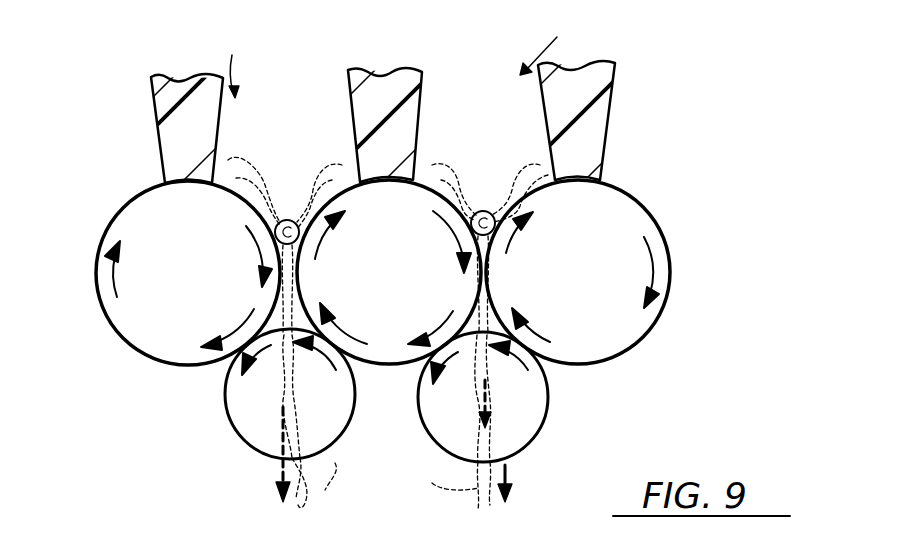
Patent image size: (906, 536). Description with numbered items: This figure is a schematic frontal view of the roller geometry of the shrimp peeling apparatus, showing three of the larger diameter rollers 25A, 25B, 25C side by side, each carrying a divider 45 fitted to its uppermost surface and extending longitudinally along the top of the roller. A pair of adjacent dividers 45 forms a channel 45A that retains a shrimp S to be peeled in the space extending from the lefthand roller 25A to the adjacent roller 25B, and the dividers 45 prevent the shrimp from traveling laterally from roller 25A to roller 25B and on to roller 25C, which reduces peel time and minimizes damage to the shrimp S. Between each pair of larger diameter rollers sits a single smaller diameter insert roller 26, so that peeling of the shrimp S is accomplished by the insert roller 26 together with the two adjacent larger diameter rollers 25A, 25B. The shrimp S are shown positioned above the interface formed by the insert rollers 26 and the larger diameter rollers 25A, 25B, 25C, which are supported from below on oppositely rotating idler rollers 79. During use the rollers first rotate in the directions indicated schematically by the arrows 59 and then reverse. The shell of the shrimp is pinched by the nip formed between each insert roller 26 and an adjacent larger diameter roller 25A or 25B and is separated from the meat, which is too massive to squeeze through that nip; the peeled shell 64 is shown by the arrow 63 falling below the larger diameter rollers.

The divider 45 is at (165, 105).
The channel 45A is at (404, 62).
The shrimp S is at (228, 165).
The smaller diameter insert roller 26 is at (289, 218).
The arrow 59 is at (118, 290).
The lefthand larger diameter roller 25A is at (148, 283).
The larger diameter roller 25B is at (343, 283).
The larger diameter roller 25C is at (530, 286).
The idler roller 79 is at (252, 398).
The arrow 63 is at (278, 480).
The peeled shell 64 is at (335, 463).